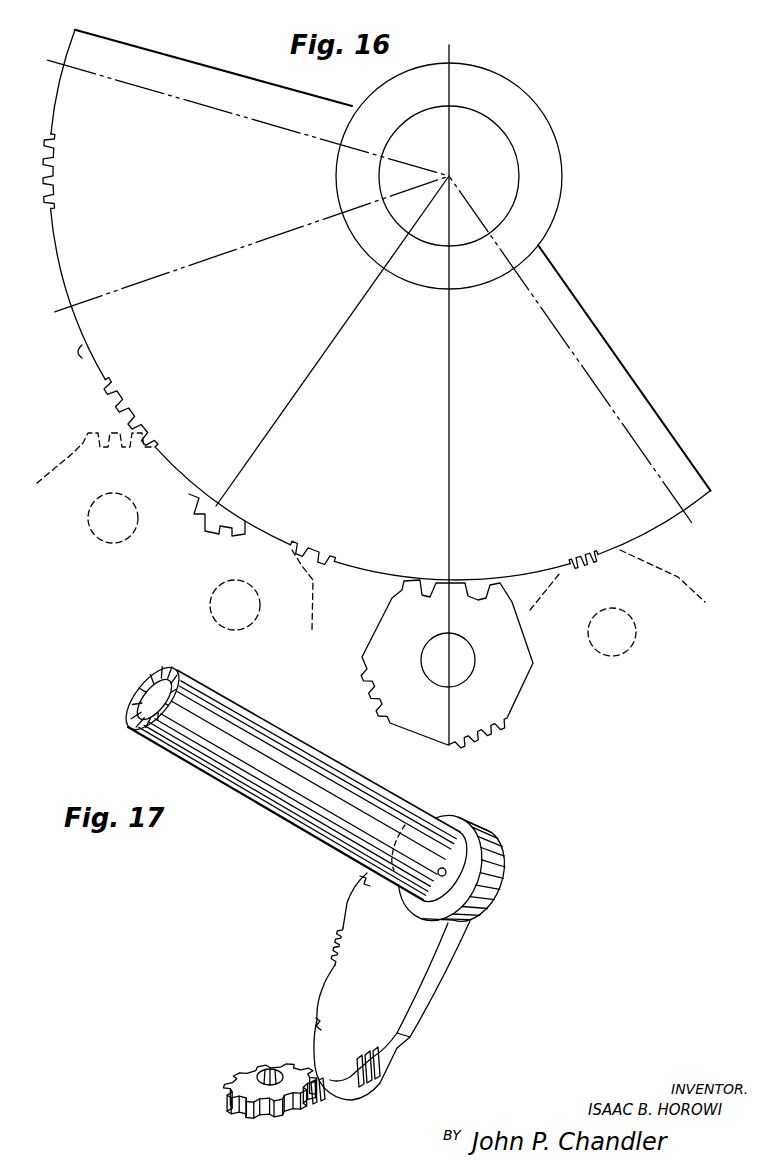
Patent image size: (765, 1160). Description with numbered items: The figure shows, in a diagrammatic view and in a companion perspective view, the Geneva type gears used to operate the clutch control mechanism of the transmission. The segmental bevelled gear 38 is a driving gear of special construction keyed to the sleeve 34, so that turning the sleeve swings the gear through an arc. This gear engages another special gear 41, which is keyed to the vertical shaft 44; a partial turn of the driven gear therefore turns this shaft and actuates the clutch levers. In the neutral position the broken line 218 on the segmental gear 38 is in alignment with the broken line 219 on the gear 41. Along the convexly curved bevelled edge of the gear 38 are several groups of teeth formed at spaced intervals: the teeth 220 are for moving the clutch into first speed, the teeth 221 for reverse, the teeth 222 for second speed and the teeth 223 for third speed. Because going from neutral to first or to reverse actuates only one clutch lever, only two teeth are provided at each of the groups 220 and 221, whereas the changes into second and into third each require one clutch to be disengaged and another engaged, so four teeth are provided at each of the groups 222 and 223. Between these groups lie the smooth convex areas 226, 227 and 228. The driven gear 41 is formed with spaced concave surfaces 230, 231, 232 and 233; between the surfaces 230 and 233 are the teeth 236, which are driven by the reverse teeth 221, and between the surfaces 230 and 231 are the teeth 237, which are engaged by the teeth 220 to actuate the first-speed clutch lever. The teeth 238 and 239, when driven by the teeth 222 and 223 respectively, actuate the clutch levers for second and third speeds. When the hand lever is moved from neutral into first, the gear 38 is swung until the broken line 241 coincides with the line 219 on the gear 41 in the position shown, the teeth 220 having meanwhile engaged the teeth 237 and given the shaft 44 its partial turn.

In FIG. 17, the sleeve 34 is at (310, 790).
In FIG. 16, the segmental bevelled gear 38 is at (289, 318).
In FIG. 17, the segmental bevelled gear 38 is at (399, 969).
In FIG. 16, the special gear 41 is at (512, 672).
In FIG. 17, the special gear 41 is at (291, 1093).
In FIG. 16, the vertical shaft 44 is at (461, 673).
In FIG. 16, the broken line 218 is at (452, 513).
In FIG. 16, the broken line 219 is at (446, 627).
In FIG. 16, the teeth 220 is at (329, 562).
In FIG. 17, the teeth 220 is at (314, 1020).
In FIG. 16, the teeth 221 is at (592, 550).
In FIG. 17, the teeth 221 is at (366, 1088).
In FIG. 16, the teeth 222 is at (130, 409).
In FIG. 17, the teeth 222 is at (332, 946).
In FIG. 16, the teeth 223 is at (50, 160).
In FIG. 17, the teeth 223 is at (362, 877).
In FIG. 16, the smooth convex area 226 is at (375, 575).
In FIG. 17, the smooth convex area 226 is at (350, 1094).
In FIG. 16, the smooth convex area 227 is at (228, 513).
In FIG. 17, the smooth convex area 227 is at (319, 985).
In FIG. 16, the smooth convex area 228 is at (88, 352).
In FIG. 17, the smooth convex area 228 is at (347, 905).
In FIG. 16, the concave surface 230 is at (463, 582).
In FIG. 16, the concave surface 231 is at (372, 640).
In FIG. 16, the concave surface 232 is at (423, 731).
In FIG. 16, the concave surface 233 is at (527, 638).
In FIG. 16, the teeth 236 is at (494, 592).
In FIG. 16, the teeth 237 is at (416, 583).
In FIG. 17, the teeth 237 is at (293, 1062).
In FIG. 16, the teeth 238 is at (374, 691).
In FIG. 17, the teeth 238 is at (240, 1062).
In FIG. 16, the teeth 239 is at (484, 733).
In FIG. 17, the teeth 239 is at (240, 1112).
In FIG. 16, the broken line 241 is at (288, 431).